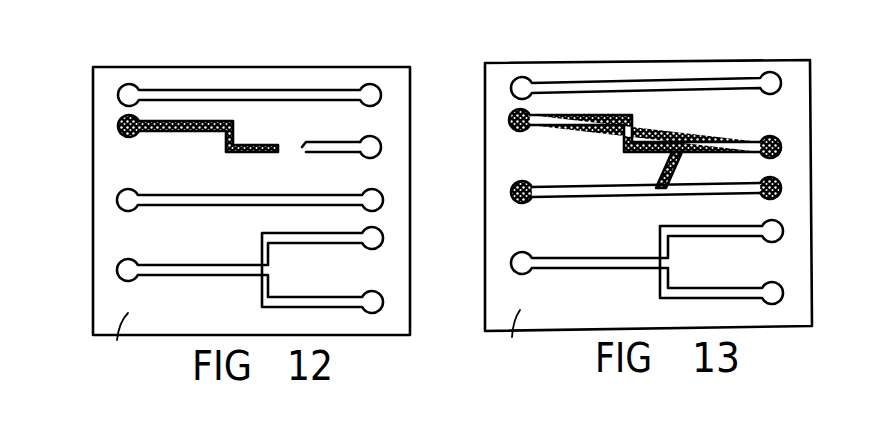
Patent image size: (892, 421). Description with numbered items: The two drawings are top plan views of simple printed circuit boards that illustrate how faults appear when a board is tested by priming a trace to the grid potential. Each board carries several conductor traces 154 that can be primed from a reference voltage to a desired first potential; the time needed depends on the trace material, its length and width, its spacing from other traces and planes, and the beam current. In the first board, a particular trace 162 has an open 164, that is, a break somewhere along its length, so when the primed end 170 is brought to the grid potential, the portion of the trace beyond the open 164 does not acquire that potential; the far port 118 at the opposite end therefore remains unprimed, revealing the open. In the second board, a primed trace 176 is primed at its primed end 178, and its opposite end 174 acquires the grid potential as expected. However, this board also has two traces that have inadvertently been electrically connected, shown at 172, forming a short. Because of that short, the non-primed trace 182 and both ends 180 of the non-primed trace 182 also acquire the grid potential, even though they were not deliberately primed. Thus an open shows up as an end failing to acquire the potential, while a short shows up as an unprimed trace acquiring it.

In FIG. 12, the port 118 is at (381, 145).
In FIG. 12, the conductor trace 154 is at (313, 95).
In FIG. 13, the conductor trace 154 is at (700, 81).
In FIG. 12, the trace 162 is at (153, 157).
In FIG. 12, the open 164 is at (374, 85).
In FIG. 12, the primed end 170 is at (118, 123).
In FIG. 13, the electrical connection 172 is at (675, 162).
In FIG. 13, the end of primed trace 174 is at (781, 140).
In FIG. 13, the primed trace 176 is at (652, 105).
In FIG. 13, the primed end 178 is at (512, 115).
In FIG. 13, the ends of non-primed trace 180 is at (587, 198).
In FIG. 13, the non-primed trace 182 is at (657, 234).